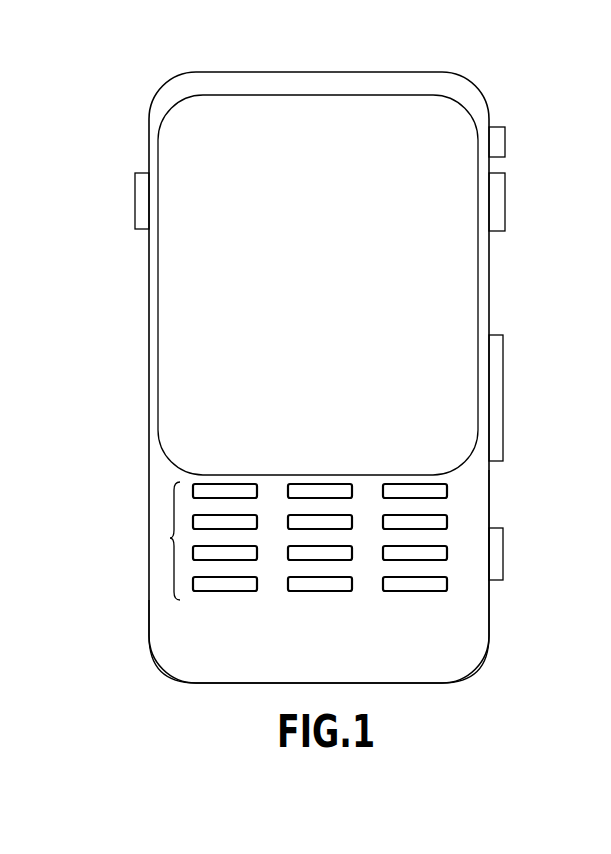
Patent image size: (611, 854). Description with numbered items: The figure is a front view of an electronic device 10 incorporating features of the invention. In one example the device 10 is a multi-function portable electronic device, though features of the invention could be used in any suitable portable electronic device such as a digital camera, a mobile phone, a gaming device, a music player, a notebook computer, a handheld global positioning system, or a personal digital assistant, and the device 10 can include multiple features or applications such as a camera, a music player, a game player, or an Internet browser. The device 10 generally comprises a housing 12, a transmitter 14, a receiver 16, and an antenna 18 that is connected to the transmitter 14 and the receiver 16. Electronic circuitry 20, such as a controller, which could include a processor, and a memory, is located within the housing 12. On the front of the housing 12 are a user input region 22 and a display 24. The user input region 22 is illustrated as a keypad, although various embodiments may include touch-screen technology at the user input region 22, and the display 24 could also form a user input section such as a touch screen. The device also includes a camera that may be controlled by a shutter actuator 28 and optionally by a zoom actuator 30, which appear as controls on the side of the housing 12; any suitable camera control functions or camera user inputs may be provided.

The electronic device 10 is at (492, 684).
The housing 12 is at (460, 73).
The transmitter 14 is at (160, 585).
The receiver 16 is at (160, 633).
The antenna 18 is at (160, 480).
The electronic circuitry 20 is at (478, 513).
The user input region 22 is at (170, 538).
The display 24 is at (180, 300).
The shutter actuator 28 is at (498, 548).
The zoom actuator 30 is at (498, 375).